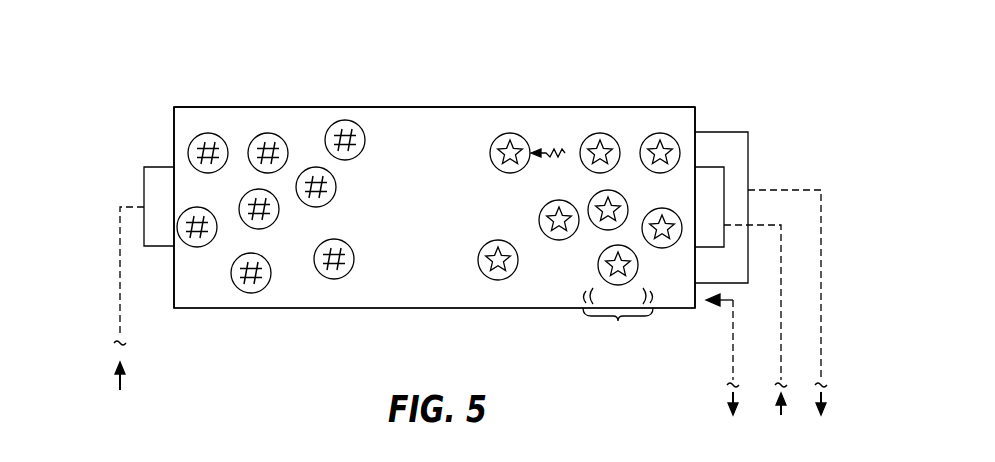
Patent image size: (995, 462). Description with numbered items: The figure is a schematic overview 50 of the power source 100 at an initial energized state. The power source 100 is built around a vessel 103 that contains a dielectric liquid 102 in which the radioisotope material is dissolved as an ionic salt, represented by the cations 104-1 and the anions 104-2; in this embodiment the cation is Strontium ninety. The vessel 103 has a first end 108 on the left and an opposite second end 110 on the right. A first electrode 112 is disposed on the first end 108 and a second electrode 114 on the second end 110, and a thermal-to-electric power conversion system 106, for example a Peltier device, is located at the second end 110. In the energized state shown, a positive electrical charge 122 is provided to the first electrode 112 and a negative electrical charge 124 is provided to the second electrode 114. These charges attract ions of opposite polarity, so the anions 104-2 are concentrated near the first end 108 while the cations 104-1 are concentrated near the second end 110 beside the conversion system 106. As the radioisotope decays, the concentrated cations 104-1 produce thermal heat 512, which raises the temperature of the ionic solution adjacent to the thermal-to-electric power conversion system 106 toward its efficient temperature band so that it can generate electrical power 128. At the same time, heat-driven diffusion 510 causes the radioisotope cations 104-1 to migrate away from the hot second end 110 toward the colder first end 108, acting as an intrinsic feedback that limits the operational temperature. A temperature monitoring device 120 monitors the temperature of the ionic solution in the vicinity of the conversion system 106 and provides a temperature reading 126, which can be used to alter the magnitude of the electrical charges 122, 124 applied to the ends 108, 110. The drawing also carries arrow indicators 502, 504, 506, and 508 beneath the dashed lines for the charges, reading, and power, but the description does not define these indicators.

The schematic overview 50 is at (112, 71).
The power source 100 is at (187, 100).
The dielectric liquid 102 is at (445, 167).
The vessel 103 is at (346, 106).
The cations 104-1 is at (665, 133).
The anions 104-2 is at (271, 133).
The thermal-to-electric power conversion system 106 is at (748, 148).
The first end 108 is at (168, 137).
The second end 110 is at (702, 118).
The first electrode 112 is at (144, 183).
The second electrode 114 is at (725, 180).
The temperature monitoring device 120 is at (703, 306).
The positive electrical charge 122 is at (120, 285).
The negative electrical charge 124 is at (781, 325).
The temperature reading 126 is at (732, 358).
The electrical power 128 is at (822, 275).
The inlet air flow 502 is at (120, 378).
The return air flow 504 is at (784, 414).
The outlet air flow 506 is at (825, 414).
The exhaust air flow 508 is at (737, 414).
The heat-driven diffusion 510 is at (562, 148).
The thermal heat 512 is at (618, 322).